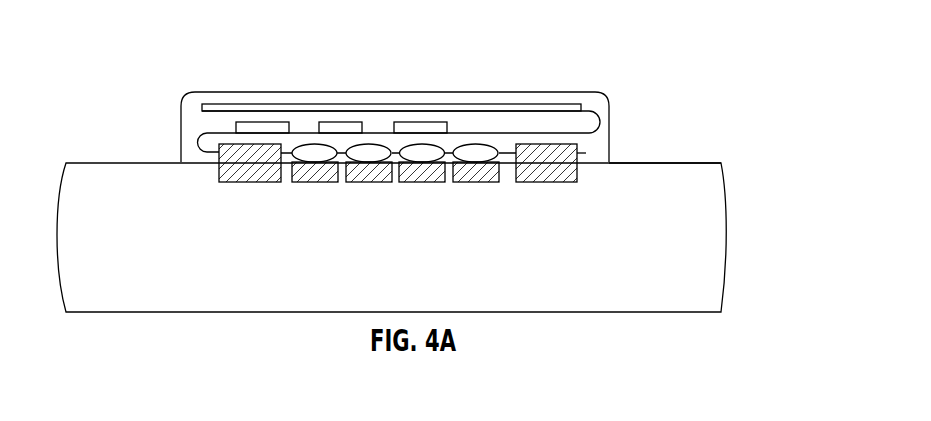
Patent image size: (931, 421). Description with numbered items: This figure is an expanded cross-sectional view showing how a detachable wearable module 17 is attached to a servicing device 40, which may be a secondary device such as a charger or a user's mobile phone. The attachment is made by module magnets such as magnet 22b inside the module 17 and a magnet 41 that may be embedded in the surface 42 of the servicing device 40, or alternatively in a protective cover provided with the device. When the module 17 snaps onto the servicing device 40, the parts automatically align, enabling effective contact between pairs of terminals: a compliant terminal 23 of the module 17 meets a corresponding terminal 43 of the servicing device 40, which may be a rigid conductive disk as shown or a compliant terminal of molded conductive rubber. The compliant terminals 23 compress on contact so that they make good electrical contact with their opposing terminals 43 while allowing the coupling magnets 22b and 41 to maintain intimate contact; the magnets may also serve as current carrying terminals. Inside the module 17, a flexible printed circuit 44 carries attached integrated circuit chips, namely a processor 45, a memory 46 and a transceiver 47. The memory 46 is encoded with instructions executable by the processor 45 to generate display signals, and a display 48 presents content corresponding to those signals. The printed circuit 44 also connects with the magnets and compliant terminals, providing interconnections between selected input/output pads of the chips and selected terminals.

The wearable module 17 is at (594, 103).
The module magnet 22b is at (233, 157).
The compliant terminal 23 is at (370, 152).
The servicing device 40 is at (707, 223).
The magnet 41 is at (238, 178).
The surface 42 is at (683, 162).
The terminal 43 is at (368, 177).
The flexible printed circuit 44 is at (485, 133).
The processor 45 is at (267, 124).
The memory 46 is at (347, 131).
The transceiver 47 is at (418, 131).
The display 48 is at (308, 106).